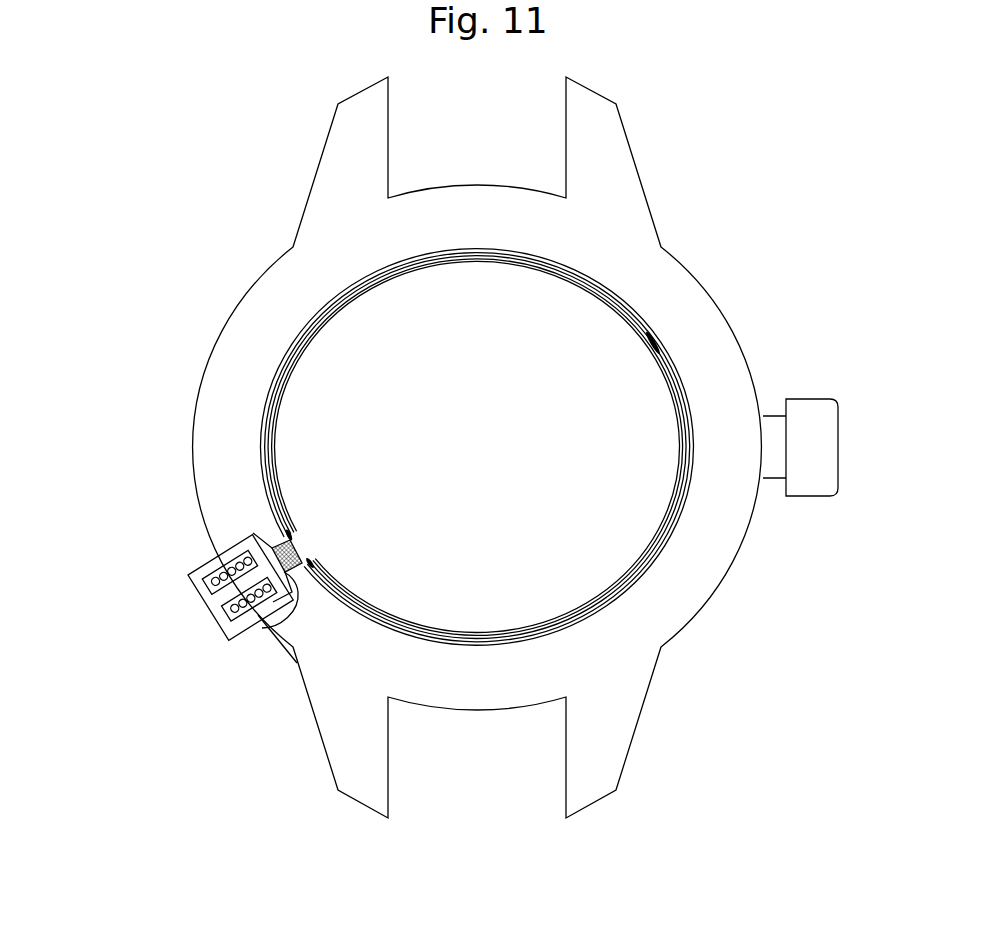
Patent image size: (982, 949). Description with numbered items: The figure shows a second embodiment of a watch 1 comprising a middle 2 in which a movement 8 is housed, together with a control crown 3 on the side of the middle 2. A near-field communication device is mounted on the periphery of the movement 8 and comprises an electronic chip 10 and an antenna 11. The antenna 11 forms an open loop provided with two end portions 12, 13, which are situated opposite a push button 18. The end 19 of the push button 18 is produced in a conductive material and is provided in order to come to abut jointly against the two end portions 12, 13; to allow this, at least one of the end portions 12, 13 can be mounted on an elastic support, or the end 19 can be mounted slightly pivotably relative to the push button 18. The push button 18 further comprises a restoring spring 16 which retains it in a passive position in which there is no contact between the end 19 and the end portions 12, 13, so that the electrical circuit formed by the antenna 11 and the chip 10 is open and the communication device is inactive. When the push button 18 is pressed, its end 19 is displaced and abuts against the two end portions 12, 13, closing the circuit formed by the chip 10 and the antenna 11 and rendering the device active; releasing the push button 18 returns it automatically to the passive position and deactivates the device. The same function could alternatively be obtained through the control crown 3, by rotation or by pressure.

The watch 1 is at (84, 246).
The middle 2 is at (717, 382).
The control crown 3 is at (808, 457).
The movement 8 is at (623, 530).
The electronic chip 10 is at (663, 338).
The antenna 11 is at (268, 478).
The end portion 12 is at (285, 534).
The end portion 13 is at (297, 663).
The restoring spring 16 is at (217, 599).
The push button 18 is at (203, 597).
The end of the push button 19 is at (262, 628).